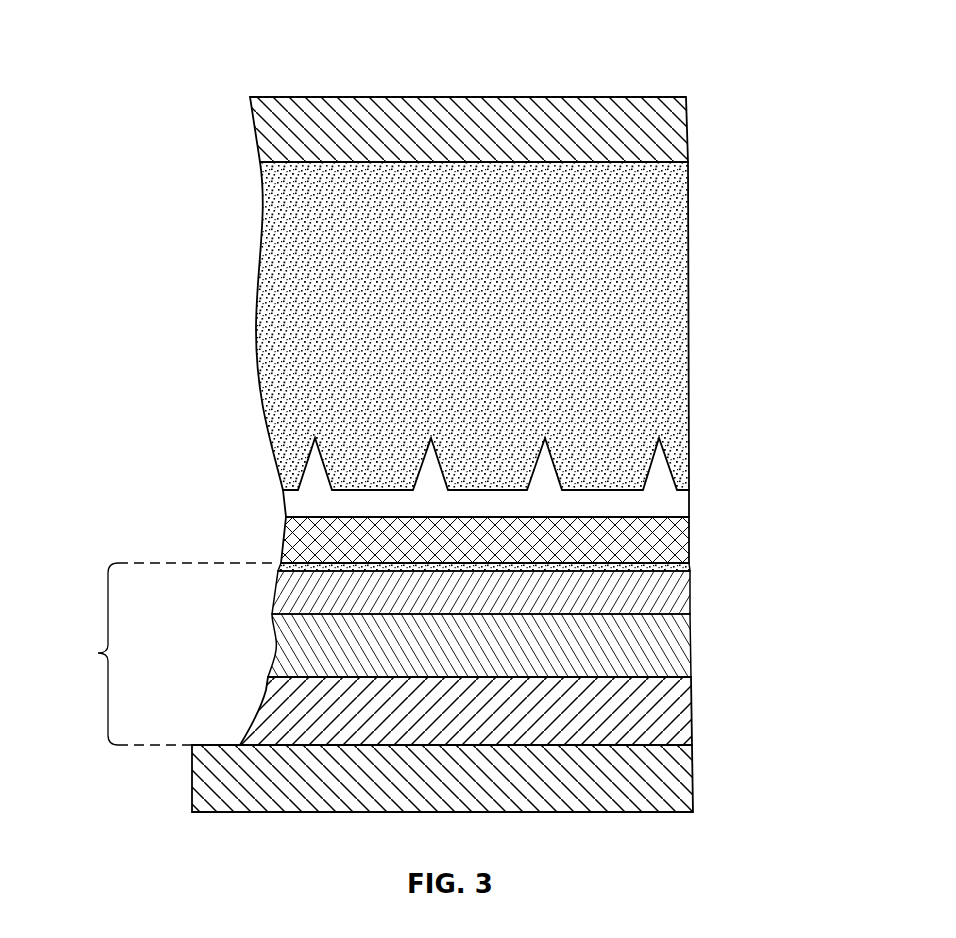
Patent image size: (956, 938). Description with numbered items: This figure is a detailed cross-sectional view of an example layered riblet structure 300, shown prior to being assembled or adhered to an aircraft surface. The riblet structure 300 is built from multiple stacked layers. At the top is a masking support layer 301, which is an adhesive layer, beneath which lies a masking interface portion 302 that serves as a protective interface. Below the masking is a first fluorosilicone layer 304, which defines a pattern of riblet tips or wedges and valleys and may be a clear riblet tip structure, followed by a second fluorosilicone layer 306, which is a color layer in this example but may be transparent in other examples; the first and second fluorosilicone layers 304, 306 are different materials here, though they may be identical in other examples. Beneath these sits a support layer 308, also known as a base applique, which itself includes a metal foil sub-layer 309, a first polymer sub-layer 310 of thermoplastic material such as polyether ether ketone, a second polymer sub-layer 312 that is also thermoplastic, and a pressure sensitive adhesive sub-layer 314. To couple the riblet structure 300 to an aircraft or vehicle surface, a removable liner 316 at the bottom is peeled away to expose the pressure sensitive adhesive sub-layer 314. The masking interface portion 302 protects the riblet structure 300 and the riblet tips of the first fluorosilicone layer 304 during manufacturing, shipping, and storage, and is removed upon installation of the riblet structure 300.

The layered riblet structure 300 is at (170, 50).
The masking support layer 301 is at (677, 140).
The masking interface portion 302 is at (660, 233).
The first fluorosilicone layer 304 is at (673, 505).
The second fluorosilicone layer 306 is at (673, 543).
The support layer 308 is at (439, 665).
The metal foil sub-layer 309 is at (678, 567).
The first polymer sub-layer 310 is at (673, 595).
The second polymer sub-layer 312 is at (673, 650).
The pressure sensitive adhesive sub-layer 314 is at (673, 717).
The removable liner 316 is at (673, 767).